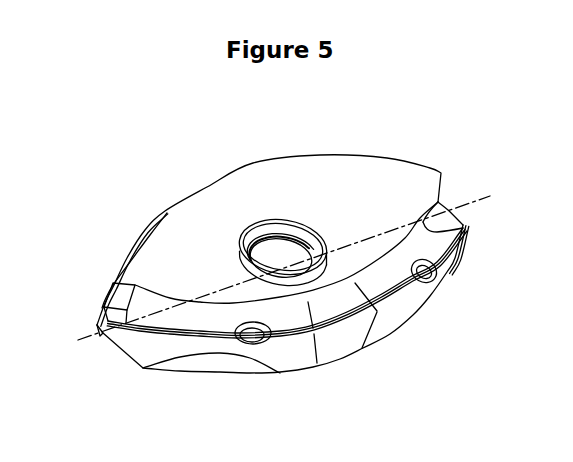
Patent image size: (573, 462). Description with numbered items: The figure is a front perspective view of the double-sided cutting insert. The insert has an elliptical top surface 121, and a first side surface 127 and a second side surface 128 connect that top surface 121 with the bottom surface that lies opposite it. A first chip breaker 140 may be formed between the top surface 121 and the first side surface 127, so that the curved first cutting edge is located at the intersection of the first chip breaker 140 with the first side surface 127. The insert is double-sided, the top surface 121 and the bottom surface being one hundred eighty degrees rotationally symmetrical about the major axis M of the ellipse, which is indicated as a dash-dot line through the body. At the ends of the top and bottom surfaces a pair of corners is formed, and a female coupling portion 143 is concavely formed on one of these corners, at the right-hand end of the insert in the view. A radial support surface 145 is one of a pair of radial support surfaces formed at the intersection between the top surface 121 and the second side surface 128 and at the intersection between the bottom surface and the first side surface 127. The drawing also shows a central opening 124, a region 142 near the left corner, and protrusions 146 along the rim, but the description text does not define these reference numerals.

The top surface 121 is at (360, 174).
The central hole 124 is at (275, 222).
The first side surface 127 is at (295, 358).
The second side surface 128 is at (108, 278).
The first chip breaker 140 is at (340, 308).
The cutting edge 142 is at (100, 338).
The female coupling portion 143 is at (452, 204).
The radial support surface 145 is at (166, 213).
The protrusion 146 is at (253, 342).
The major axis M is at (95, 328).